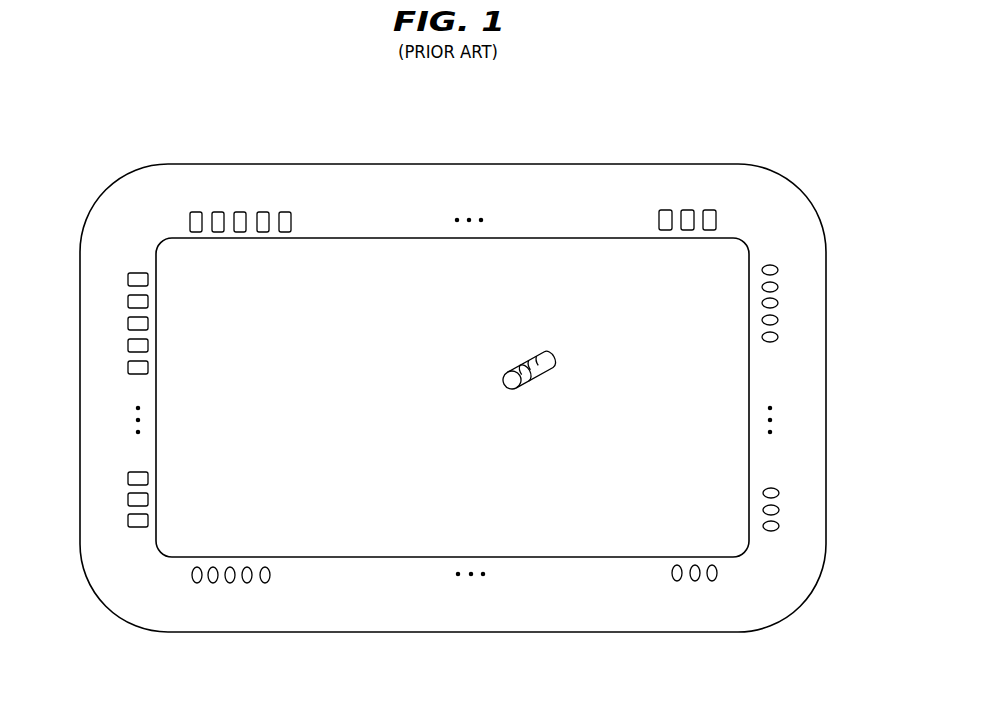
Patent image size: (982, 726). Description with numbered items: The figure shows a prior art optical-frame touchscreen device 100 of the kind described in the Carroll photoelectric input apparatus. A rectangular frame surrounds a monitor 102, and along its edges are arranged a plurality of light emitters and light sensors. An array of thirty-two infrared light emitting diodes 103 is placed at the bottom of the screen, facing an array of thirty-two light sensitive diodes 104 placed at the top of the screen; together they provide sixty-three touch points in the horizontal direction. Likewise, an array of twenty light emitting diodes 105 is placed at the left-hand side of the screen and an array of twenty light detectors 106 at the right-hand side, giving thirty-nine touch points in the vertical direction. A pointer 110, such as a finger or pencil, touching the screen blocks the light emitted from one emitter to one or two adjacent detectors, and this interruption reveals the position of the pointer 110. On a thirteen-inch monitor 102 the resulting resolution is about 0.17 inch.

The optical-frame touchscreen device 100 is at (682, 162).
The monitor 102 is at (562, 258).
The infrared light emitting diodes 103 is at (237, 588).
The light sensitive diodes 104 is at (235, 202).
The light emitting diodes 105 is at (785, 298).
The light detectors 106 is at (122, 322).
The pointer 110 is at (538, 380).